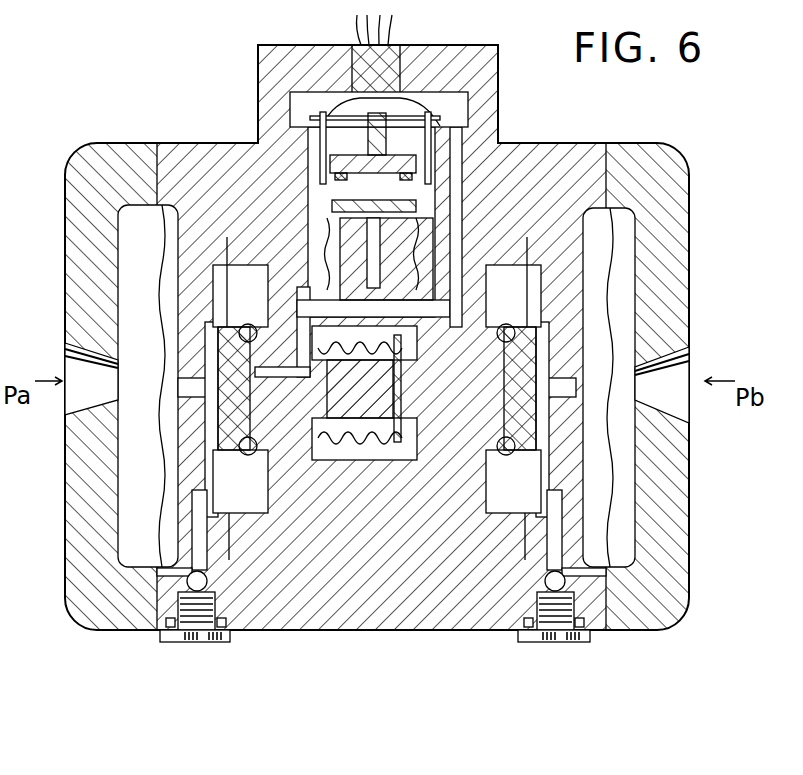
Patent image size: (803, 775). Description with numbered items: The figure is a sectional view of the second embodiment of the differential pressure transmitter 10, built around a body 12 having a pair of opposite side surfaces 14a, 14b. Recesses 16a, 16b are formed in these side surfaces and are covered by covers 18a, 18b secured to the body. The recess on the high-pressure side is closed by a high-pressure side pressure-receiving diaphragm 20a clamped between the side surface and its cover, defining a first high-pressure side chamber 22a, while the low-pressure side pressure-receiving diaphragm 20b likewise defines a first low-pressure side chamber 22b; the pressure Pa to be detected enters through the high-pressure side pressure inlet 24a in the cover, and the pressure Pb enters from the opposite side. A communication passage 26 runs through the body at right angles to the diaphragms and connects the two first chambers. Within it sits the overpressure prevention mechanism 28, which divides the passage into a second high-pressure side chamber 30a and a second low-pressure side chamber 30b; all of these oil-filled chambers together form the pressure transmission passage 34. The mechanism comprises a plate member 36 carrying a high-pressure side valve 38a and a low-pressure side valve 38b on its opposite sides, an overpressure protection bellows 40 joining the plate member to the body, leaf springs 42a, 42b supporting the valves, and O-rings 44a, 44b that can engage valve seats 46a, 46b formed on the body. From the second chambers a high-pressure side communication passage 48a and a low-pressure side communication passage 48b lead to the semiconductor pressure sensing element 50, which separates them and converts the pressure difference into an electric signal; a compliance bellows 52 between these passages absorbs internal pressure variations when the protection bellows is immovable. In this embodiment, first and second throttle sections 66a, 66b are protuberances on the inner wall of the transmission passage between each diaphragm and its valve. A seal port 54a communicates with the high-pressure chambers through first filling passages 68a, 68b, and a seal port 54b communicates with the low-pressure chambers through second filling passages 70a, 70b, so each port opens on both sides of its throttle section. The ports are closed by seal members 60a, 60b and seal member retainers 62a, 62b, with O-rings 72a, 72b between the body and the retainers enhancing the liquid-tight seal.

The differential pressure transmitter 10 is at (122, 132).
The body 12 is at (526, 160).
The side surface 14a is at (152, 168).
The side surface 14b is at (606, 160).
The recess 16a is at (165, 228).
The recess 16b is at (598, 236).
The cover 18a is at (90, 292).
The cover 18b is at (672, 294).
The high-pressure side pressure-receiving diaphragm 20a is at (165, 252).
The low-pressure side pressure-receiving diaphragm 20b is at (608, 266).
The first high-pressure side chamber 22a is at (186, 378).
The first low-pressure side chamber 22b is at (602, 418).
The high-pressure side pressure inlet 24a is at (80, 372).
The communication passage 26 is at (440, 408).
The overpressure prevention mechanism 28 is at (348, 432).
The second high-pressure side chamber 30a is at (242, 290).
The second low-pressure side chamber 30b is at (493, 440).
The pressure transmission passage 34 is at (330, 452).
The plate member 36 is at (406, 470).
The high-pressure side valve 38a is at (232, 425).
The low-pressure side valve 38b is at (525, 356).
The overpressure protection bellows 40 is at (382, 440).
The leaf spring 42a is at (236, 520).
The leaf spring 42b is at (522, 505).
The O-ring 44a is at (252, 440).
The O-ring 44b is at (402, 440).
The valve seat 46a is at (262, 480).
The valve seat 46b is at (410, 430).
The high-pressure side communication passage 48a is at (323, 295).
The low-pressure side communication passage 48b is at (456, 210).
The semiconductor pressure sensing element 50 is at (412, 178).
The compliance bellows 52 is at (332, 222).
The seal port 54a is at (210, 596).
The seal port 54b is at (540, 592).
The seal member 60a is at (203, 578).
The seal member 60b is at (546, 578).
The seal member retainer 62a is at (184, 640).
The seal member retainer 62b is at (545, 640).
The first throttle section 66a is at (196, 392).
The second throttle section 66b is at (560, 436).
The first filling passage 68a is at (168, 574).
The first filling passage 68b is at (194, 516).
The second filling passage 70a is at (584, 576).
The second filling passage 70b is at (560, 516).
The O-ring 72a is at (230, 630).
The O-ring 72b is at (590, 630).